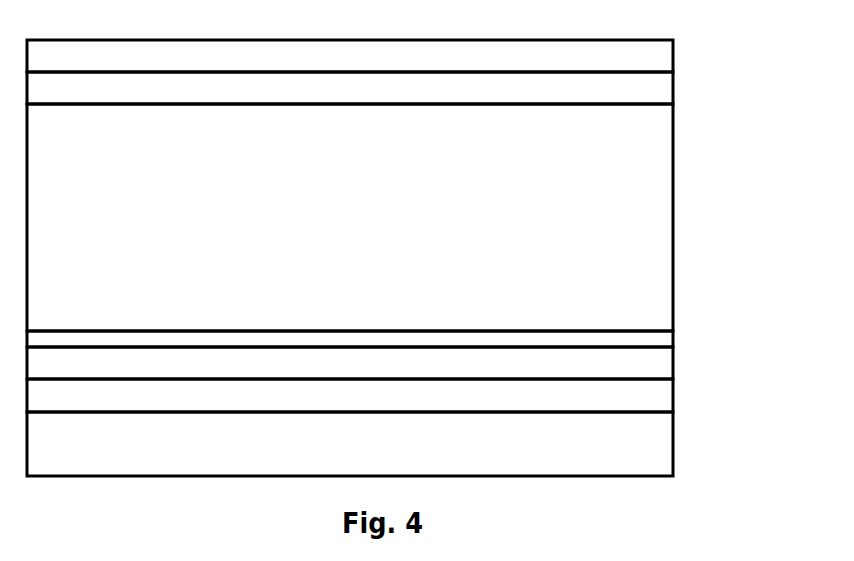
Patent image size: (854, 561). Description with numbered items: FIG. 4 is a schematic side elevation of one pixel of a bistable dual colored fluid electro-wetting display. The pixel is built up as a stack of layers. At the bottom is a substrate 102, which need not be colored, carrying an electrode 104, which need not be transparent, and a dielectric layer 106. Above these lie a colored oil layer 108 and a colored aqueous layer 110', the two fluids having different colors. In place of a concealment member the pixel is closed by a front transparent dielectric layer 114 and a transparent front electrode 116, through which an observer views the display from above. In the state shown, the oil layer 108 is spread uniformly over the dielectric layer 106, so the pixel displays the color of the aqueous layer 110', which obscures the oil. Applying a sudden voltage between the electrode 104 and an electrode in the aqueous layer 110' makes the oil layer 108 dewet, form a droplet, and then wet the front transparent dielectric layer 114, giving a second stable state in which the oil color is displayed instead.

The substrate 102 is at (626, 443).
The electrode 104 is at (626, 395).
The dielectric layer 106 is at (625, 362).
The colored oil layer 108 is at (610, 340).
The colored aqueous layer 110' is at (350, 217).
The front transparent dielectric layer 114 is at (649, 88).
The transparent front electrode 116 is at (640, 57).